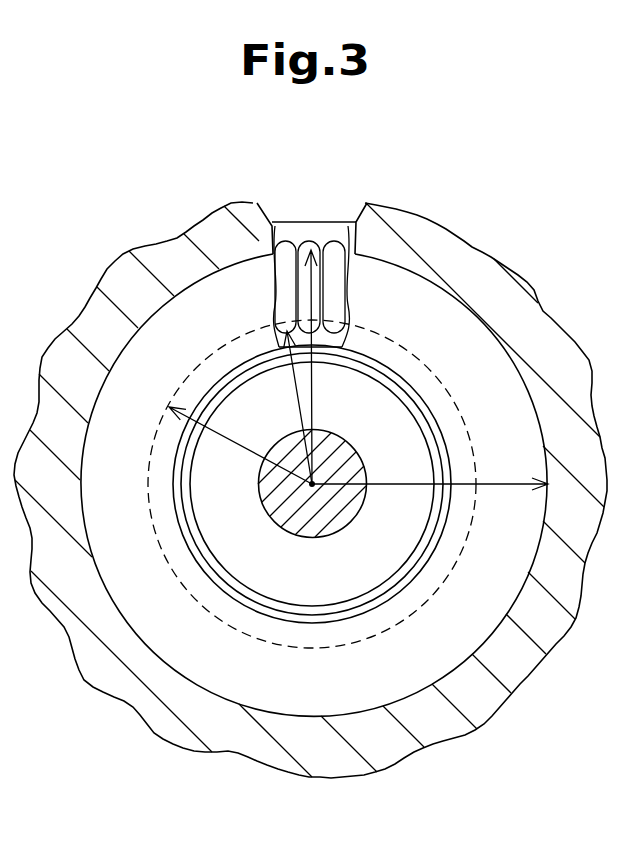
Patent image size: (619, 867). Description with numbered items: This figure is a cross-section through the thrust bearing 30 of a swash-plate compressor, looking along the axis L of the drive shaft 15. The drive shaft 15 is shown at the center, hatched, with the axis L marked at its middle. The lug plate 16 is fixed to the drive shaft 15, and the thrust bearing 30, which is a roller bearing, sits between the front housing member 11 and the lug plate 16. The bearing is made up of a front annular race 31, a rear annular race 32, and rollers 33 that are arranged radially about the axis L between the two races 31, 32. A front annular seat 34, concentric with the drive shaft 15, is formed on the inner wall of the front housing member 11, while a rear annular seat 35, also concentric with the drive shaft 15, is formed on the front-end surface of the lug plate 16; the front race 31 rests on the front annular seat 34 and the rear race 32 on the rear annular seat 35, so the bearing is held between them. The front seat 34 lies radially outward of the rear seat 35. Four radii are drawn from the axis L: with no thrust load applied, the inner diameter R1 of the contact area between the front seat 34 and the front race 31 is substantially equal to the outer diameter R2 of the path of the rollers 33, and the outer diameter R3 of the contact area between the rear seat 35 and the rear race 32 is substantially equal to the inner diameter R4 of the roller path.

The front housing member 11 is at (428, 218).
The drive shaft 15 is at (268, 504).
The lug plate 16 is at (355, 570).
The thrust bearing 30 is at (262, 210).
The front annular race 31 is at (208, 296).
The rear annular race 32 is at (340, 225).
The rollers 33 is at (340, 223).
The front annular seat 34 is at (436, 247).
The rear annular seat 35 is at (425, 368).
The axis L is at (308, 500).
The inner diameter of the contact area between the front seat and front race R1 is at (394, 484).
The outer diameter of the path of the rollers R2 is at (315, 390).
The outer diameter of the contact area between the rear seat and rear race R3 is at (232, 442).
The inner diameter of the path of the rollers R4 is at (290, 394).